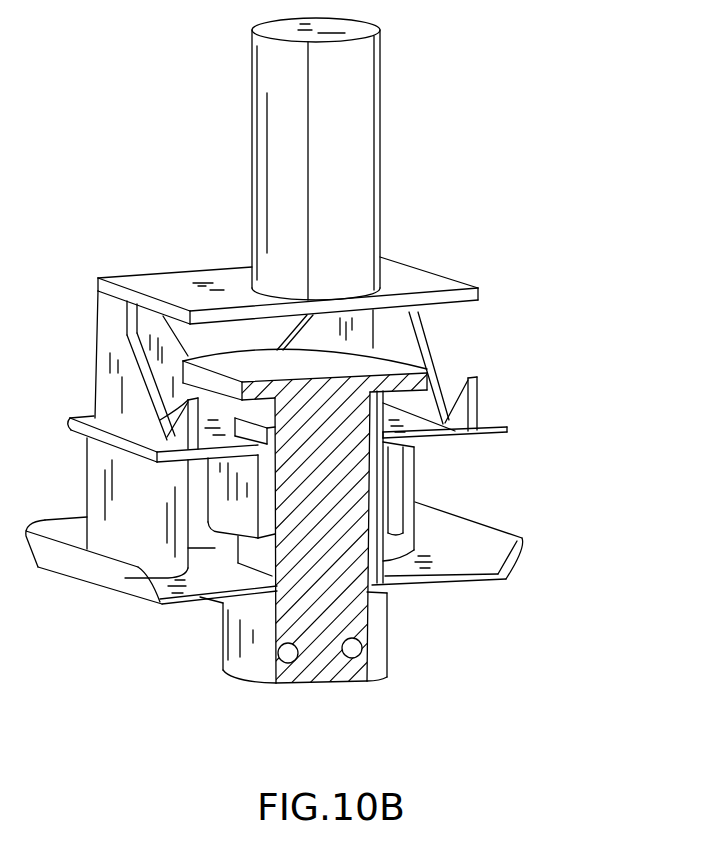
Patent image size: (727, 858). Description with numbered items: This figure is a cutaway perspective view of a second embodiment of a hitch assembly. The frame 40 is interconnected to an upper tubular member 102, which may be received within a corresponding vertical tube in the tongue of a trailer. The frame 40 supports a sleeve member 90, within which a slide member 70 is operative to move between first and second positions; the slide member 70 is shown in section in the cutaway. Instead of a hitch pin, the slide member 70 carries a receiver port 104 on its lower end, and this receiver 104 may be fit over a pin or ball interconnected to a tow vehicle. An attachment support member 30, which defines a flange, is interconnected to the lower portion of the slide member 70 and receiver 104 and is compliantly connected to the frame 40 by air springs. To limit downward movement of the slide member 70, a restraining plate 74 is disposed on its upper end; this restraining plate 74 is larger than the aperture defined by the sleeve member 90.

The upper tubular member 102 is at (367, 163).
The frame 40 is at (432, 280).
The restraining plate 74 is at (403, 358).
The slide member 70 is at (341, 491).
The sleeve member 90 is at (240, 515).
The attachment support member 30 is at (480, 585).
The receiver port 104 is at (347, 675).